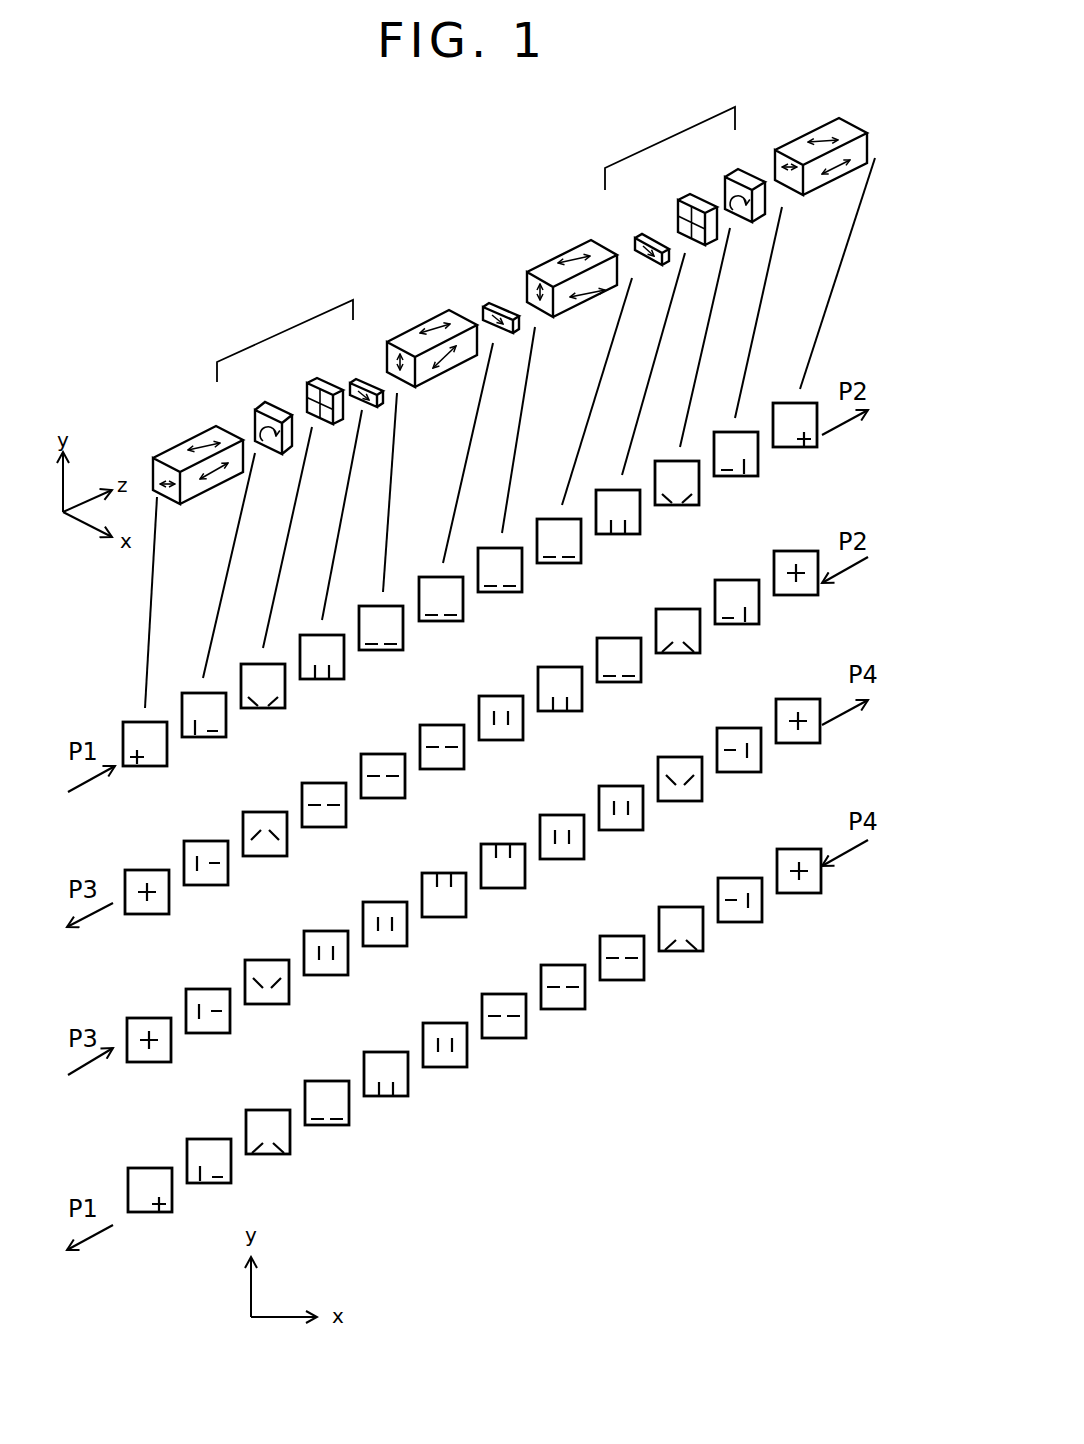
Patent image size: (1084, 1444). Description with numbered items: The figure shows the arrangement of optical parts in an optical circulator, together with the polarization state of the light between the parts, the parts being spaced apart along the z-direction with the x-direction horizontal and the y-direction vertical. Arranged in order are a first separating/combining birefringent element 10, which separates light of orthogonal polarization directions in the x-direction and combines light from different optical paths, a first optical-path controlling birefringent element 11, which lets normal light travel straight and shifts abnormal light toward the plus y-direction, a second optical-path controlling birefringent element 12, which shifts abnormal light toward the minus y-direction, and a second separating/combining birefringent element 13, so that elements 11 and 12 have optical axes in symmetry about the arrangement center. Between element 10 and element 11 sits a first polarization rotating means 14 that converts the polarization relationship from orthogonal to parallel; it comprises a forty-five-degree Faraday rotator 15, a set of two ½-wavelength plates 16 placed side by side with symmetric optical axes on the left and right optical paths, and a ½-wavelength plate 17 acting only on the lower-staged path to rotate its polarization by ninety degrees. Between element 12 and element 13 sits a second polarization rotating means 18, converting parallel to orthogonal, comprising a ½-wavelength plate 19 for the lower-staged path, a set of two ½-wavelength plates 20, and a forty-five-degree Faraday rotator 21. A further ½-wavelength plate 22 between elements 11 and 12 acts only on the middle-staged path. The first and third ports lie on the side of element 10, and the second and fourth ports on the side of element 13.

The first separating/combining birefringent element 10 is at (197, 443).
The first optical-path controlling birefringent element 11 is at (402, 337).
The second optical-path controlling birefringent element 12 is at (548, 265).
The second separating/combining birefringent element 13 is at (830, 130).
The first polarization rotating means 14 is at (300, 376).
The 45-degree Faraday rotator 15 is at (263, 408).
The set of two ½-wavelength plates 16 is at (310, 387).
The ½-wavelength plate 17 is at (347, 378).
The second polarization rotating means 18 is at (685, 186).
The ½-wavelength plate 19 is at (640, 237).
The set of two ½-wavelength plates 20 is at (682, 198).
The 45-degree Faraday rotator 21 is at (737, 175).
The ½-wavelength plate 22 is at (482, 303).